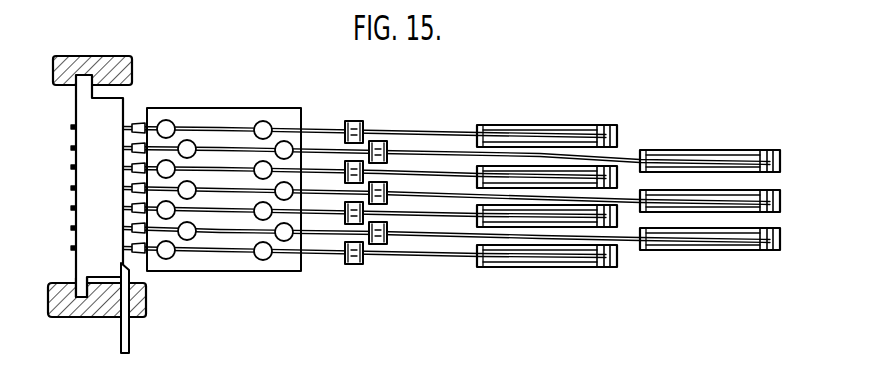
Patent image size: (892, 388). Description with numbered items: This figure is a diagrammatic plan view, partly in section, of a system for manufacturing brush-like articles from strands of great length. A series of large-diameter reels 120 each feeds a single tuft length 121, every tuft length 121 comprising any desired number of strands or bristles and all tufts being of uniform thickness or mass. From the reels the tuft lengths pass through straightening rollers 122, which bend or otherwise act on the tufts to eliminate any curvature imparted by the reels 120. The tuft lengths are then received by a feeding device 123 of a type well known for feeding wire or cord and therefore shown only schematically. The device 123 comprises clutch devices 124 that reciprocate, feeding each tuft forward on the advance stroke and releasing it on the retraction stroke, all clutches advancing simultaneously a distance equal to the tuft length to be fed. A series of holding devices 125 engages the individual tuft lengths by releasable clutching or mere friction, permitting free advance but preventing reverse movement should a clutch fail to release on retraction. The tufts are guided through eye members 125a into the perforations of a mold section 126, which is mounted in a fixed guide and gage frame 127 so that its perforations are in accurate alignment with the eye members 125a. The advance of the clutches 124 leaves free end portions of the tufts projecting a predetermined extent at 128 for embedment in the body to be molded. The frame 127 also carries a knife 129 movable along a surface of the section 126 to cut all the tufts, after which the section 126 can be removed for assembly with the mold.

The reels 120 is at (664, 251).
The tuft length 121 is at (421, 152).
The straightening rollers 122 is at (379, 245).
The feeding device 123 is at (242, 276).
The clutch devices 124 is at (188, 238).
The one-way holding devices 125 is at (283, 239).
The eye members 125a is at (138, 122).
The mold section 126 is at (60, 191).
The guide and gage frame 127 is at (145, 305).
The projecting free end portions 128 is at (72, 127).
The knife 129 is at (120, 343).